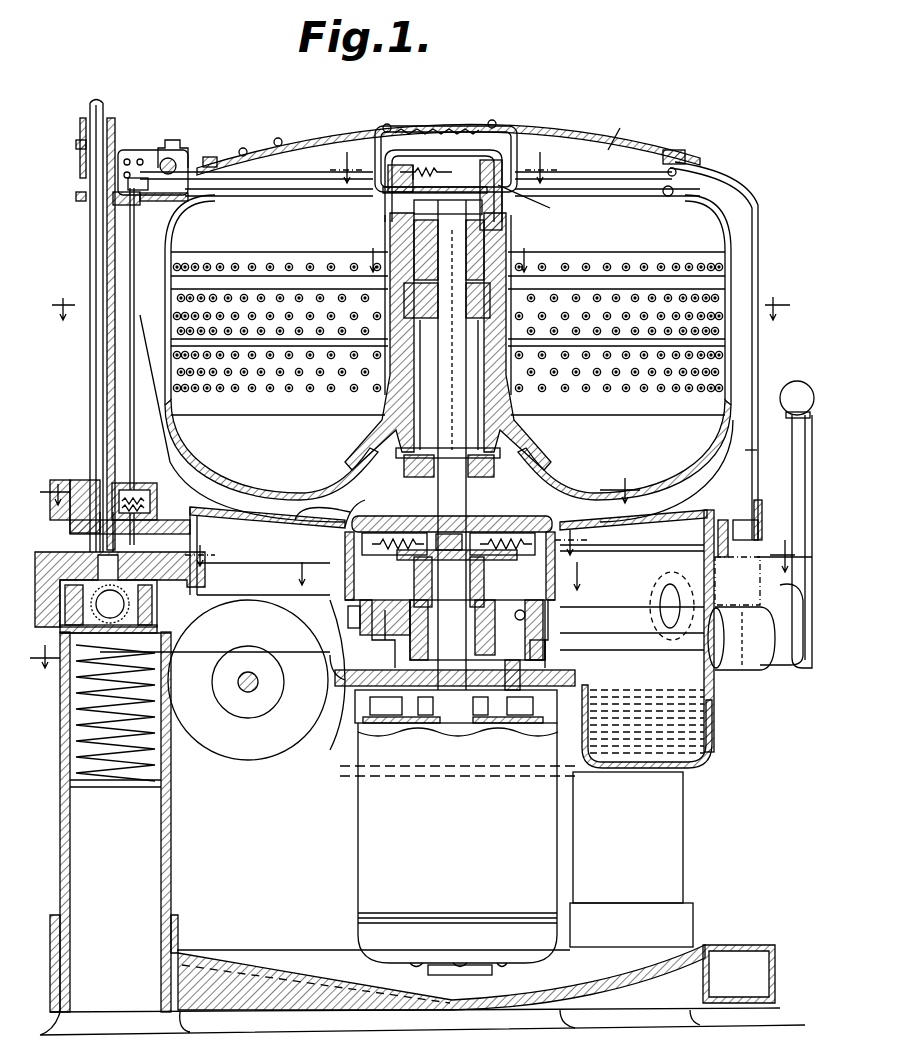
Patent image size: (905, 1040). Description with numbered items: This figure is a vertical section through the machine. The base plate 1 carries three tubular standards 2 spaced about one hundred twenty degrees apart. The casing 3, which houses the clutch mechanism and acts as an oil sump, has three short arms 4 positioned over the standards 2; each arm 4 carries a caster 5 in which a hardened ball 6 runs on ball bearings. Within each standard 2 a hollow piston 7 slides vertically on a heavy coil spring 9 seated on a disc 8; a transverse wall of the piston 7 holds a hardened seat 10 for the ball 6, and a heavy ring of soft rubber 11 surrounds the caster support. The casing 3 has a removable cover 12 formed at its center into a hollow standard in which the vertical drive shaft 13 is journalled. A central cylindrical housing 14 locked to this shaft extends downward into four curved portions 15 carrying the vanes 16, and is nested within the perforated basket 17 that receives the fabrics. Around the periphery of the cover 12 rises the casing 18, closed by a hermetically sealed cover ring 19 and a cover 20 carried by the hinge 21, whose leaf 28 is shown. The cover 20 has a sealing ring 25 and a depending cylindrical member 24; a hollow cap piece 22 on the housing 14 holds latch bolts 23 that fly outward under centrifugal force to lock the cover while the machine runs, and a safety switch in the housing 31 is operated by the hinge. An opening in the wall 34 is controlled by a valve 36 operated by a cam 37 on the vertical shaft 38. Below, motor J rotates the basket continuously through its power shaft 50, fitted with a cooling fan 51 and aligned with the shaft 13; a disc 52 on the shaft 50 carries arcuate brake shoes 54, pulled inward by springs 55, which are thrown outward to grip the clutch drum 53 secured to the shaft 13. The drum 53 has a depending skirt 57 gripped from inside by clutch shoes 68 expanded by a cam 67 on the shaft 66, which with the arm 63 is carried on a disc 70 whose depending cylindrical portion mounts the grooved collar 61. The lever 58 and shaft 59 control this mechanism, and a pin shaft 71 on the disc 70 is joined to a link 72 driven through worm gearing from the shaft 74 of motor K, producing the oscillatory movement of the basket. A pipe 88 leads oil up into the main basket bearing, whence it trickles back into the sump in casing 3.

The base plate 1 is at (725, 965).
The tubular standards 2 is at (176, 853).
The casing 3 is at (712, 722).
The short arm 4 is at (95, 565).
The caster 5 is at (150, 618).
The hardened ball 6 is at (88, 610).
The hollow piston 7 is at (170, 735).
The disc 8 is at (138, 797).
The coil spring 9 is at (92, 793).
The hardened seat 10 is at (60, 700).
The ring of soft rubber 11 is at (160, 622).
The removable cover 12 is at (692, 522).
The vertical drive shaft 13 is at (452, 428).
The central cylindrical housing 14 is at (545, 243).
The curved or concave portions 15 is at (268, 495).
The blades or vanes 16 is at (464, 428).
The perforated basket 17 is at (175, 388).
The upstanding casing 18 is at (755, 452).
The cover ring 19 is at (722, 182).
The cover 20 is at (485, 145).
The hinge 21 is at (185, 148).
The hollow cap piece 22 is at (451, 387).
The latch bolts 23 is at (368, 198).
The cylindrical member 24 is at (512, 140).
The sealing ring 25 is at (680, 155).
The hinge leaf 28 is at (255, 155).
The safety switch housing 31 is at (128, 150).
The wall 34 is at (180, 436).
The valve 36 is at (160, 498).
The cam 37 is at (62, 530).
The vertical shaft 38 is at (100, 382).
The power shaft 50 is at (458, 728).
The cooling fan 51 is at (510, 712).
The disc 52 is at (560, 566).
The clutch drum 53 is at (382, 533).
The arcuate brake shoes 54 is at (355, 542).
The springs 55 is at (492, 533).
The clutch skirt 57 is at (345, 588).
The lever 58 is at (795, 410).
The shaft 59 is at (640, 650).
The grooved collar 61 is at (420, 640).
The arm 63 is at (528, 620).
The shaft 66 is at (525, 652).
The cam 67 is at (522, 578).
The clutch shoes 68 is at (345, 558).
The disc 70 is at (370, 635).
The pin shaft 71 is at (387, 640).
The link 72 is at (355, 620).
The shaft of motor K 74 is at (252, 700).
The pipe 88 is at (353, 499).
The motor J is at (457, 849).
The motor K is at (258, 752).